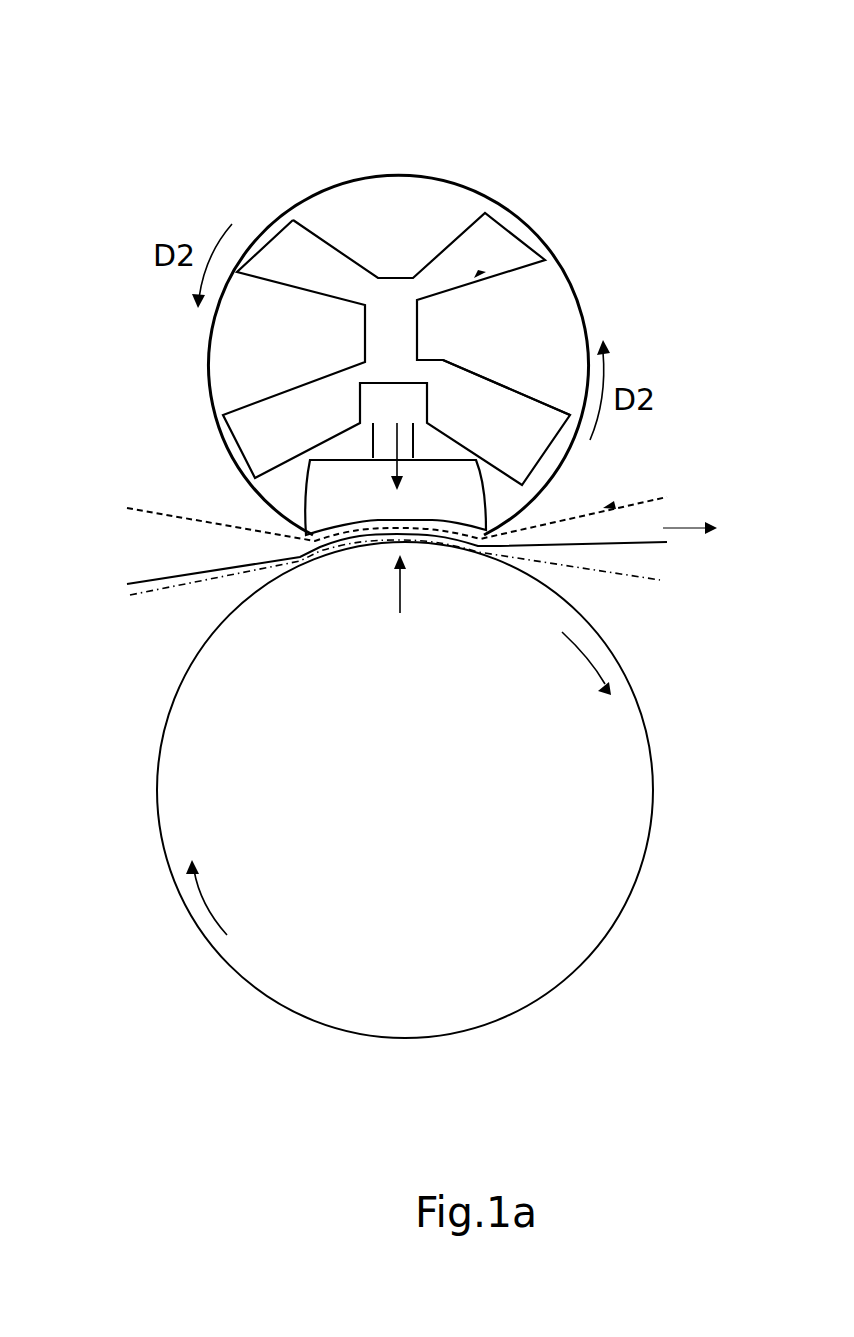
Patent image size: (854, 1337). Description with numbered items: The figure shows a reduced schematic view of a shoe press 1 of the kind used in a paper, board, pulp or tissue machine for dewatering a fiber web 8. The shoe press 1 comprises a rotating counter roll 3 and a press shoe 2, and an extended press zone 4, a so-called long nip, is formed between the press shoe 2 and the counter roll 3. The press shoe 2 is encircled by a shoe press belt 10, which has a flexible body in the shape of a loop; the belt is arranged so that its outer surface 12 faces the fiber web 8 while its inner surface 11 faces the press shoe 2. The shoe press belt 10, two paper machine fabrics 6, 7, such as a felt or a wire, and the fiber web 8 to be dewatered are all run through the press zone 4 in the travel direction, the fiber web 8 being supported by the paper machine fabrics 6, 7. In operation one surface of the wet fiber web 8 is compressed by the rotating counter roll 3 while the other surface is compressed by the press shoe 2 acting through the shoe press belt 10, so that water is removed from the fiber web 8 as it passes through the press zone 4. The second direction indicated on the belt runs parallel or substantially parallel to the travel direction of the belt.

The shoe press 1 is at (112, 78).
The press shoe 2 is at (345, 487).
The counter roll 3 is at (502, 888).
The press zone 4 is at (346, 565).
The paper machine fabric 6 is at (155, 517).
The paper machine fabric 7 is at (148, 592).
The fiber web 8 is at (142, 583).
The shoe press belt 10 is at (392, 168).
The inner surface 11 is at (558, 290).
The outer surface 12 is at (553, 239).